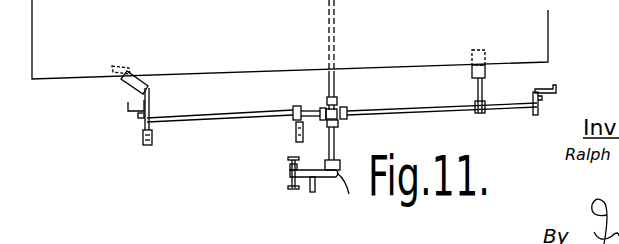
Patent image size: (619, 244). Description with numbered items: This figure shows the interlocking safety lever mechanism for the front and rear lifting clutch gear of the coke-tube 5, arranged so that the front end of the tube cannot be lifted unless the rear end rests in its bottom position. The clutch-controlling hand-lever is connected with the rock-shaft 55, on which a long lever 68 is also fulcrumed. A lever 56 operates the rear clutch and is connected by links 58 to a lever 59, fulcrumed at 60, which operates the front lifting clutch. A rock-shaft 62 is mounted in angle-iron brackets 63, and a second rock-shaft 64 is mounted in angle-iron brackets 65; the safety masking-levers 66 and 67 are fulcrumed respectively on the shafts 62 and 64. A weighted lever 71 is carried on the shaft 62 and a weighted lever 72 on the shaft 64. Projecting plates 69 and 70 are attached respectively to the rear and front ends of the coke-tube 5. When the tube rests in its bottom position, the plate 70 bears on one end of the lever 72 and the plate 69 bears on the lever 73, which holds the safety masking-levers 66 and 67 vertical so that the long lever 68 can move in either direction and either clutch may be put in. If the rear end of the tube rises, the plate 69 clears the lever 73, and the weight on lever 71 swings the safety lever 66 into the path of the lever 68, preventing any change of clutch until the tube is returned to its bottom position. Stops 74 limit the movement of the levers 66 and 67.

The coke-tube 5 is at (165, 75).
The rock-shaft 55 is at (336, 23).
The lever 56 is at (349, 194).
The links 58 is at (316, 191).
The lever 59 is at (289, 177).
The fulcrum 60 is at (263, 9).
The rock-shaft 62 is at (436, 108).
The angle-iron brackets 63 is at (546, 105).
The second rock-shaft 64 is at (232, 117).
The angle-iron brackets 65 is at (293, 110).
The safety masking-lever 66 is at (343, 108).
The safety masking-lever 67 is at (323, 110).
The long lever 68 is at (339, 123).
The projecting plate 69 is at (486, 71).
The projecting plate 70 is at (150, 88).
The weighted lever 71 is at (296, 122).
The weighted lever 72 is at (148, 146).
The lever 73 is at (482, 93).
The stops 74 is at (545, 88).